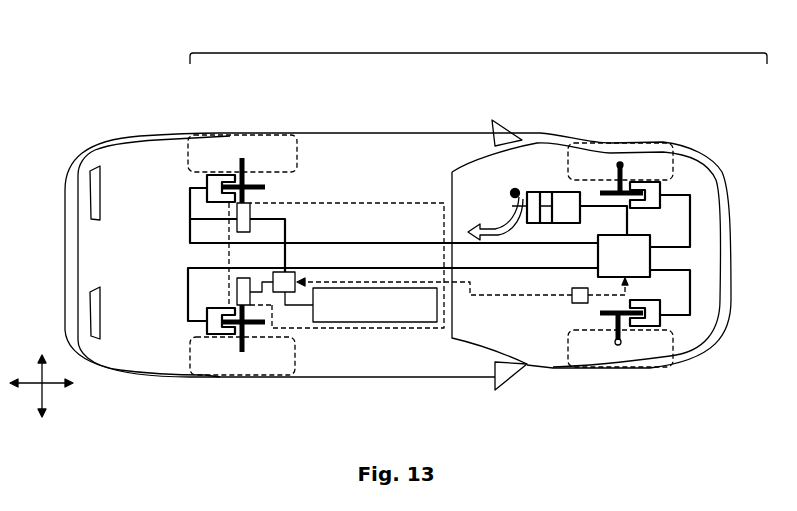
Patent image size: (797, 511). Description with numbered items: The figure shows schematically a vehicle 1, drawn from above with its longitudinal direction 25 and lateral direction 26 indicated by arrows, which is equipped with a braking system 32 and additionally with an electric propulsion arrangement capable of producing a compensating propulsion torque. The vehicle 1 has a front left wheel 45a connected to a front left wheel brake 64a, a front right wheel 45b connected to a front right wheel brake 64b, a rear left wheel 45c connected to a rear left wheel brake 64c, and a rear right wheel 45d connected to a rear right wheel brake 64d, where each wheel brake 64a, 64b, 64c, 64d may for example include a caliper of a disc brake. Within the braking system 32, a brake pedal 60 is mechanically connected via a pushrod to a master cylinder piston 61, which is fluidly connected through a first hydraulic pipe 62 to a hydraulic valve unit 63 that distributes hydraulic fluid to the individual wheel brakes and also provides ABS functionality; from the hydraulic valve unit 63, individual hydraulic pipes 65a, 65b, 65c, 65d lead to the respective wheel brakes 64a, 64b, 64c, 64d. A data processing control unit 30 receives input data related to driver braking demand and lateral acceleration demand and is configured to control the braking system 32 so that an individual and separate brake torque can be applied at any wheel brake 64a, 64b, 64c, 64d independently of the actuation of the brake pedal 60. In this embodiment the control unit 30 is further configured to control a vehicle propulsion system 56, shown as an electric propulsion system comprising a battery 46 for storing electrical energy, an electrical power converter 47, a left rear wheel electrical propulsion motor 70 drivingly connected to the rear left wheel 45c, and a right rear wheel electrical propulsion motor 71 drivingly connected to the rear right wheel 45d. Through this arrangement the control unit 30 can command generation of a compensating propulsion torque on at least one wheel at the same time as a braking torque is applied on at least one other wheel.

The vehicle 1 is at (105, 97).
The longitudinal direction 25 is at (55, 385).
The lateral direction 26 is at (41, 376).
The data processing control unit 30 is at (580, 303).
The vehicle braking system 32 is at (478, 53).
The front left wheel 45a is at (628, 163).
The front right wheel 45b is at (650, 342).
The rear left wheel 45c is at (252, 152).
The rear right wheel 45d is at (215, 350).
The battery 46 is at (385, 308).
The electrical power converter 47 is at (278, 293).
The vehicle propulsion system 56 is at (358, 330).
The brake pedal 60 is at (512, 200).
The master cylinder piston 61 is at (500, 215).
The first hydraulic pipe 62 is at (563, 192).
The hydraulic valve unit 63 is at (612, 255).
The front left wheel brake 64a is at (657, 182).
The front right wheel brake 64b is at (650, 305).
The rear left wheel brake 64c is at (210, 177).
The rear right wheel brake 64d is at (207, 310).
The individual hydraulic pipe 65a is at (692, 210).
The individual hydraulic pipe 65b is at (690, 270).
The individual hydraulic pipe 65c is at (315, 243).
The individual hydraulic pipe 65d is at (367, 268).
The left rear wheel electrical propulsion motor 70 is at (190, 219).
The right rear wheel electrical propulsion motor 71 is at (237, 290).